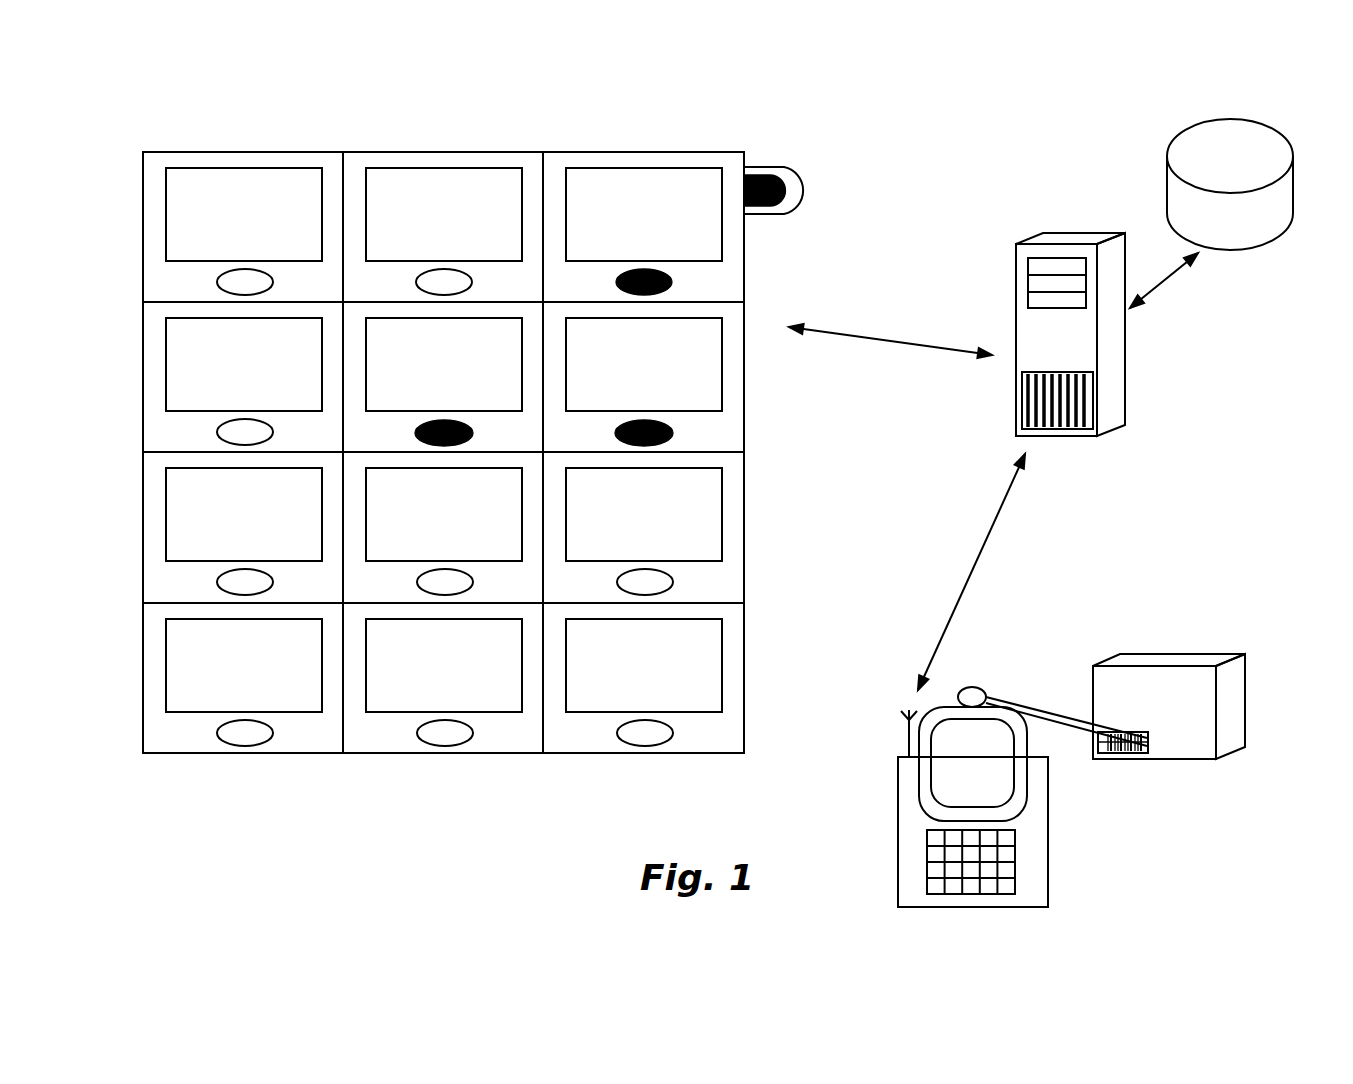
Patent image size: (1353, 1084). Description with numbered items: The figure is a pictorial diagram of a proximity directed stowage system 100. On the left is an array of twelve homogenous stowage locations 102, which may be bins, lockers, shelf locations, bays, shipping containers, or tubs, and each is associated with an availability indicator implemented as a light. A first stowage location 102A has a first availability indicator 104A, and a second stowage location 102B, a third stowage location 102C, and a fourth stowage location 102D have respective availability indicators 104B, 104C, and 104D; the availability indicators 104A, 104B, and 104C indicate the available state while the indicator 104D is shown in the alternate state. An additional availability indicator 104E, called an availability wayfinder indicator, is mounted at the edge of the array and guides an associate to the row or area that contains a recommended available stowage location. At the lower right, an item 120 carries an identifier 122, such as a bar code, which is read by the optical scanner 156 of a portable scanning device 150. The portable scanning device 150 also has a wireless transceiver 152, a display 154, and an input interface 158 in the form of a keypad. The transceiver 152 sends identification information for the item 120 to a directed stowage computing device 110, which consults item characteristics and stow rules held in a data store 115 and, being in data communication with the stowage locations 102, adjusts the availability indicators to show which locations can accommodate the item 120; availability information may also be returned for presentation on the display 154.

The proximity directed stowage system 100 is at (1000, 128).
The stowage location 102 is at (188, 147).
The first stowage location 102A is at (653, 235).
The second stowage location 102B is at (653, 385).
The third stowage location 102C is at (453, 385).
The fourth stowage location 102D is at (453, 235).
The first availability indicator 104A is at (644, 268).
The availability indicator 104B is at (644, 420).
The availability indicator 104C is at (444, 420).
The availability indicator 104D is at (444, 268).
The availability wayfinder indicator 104E is at (797, 167).
The directed stowage computing device 110 is at (1072, 240).
The data store 115 is at (1230, 184).
The item 120 is at (1175, 663).
The identifier 122 is at (1149, 733).
The portable scanning device 150 is at (877, 804).
The wireless transceiver 152 is at (905, 733).
The display 154 is at (1028, 786).
The optical scanner 156 is at (973, 686).
The input interface 158 is at (1015, 868).